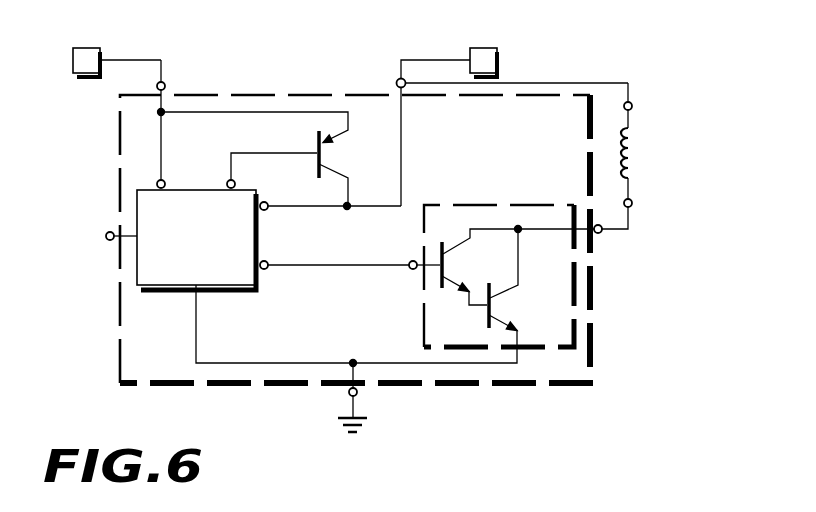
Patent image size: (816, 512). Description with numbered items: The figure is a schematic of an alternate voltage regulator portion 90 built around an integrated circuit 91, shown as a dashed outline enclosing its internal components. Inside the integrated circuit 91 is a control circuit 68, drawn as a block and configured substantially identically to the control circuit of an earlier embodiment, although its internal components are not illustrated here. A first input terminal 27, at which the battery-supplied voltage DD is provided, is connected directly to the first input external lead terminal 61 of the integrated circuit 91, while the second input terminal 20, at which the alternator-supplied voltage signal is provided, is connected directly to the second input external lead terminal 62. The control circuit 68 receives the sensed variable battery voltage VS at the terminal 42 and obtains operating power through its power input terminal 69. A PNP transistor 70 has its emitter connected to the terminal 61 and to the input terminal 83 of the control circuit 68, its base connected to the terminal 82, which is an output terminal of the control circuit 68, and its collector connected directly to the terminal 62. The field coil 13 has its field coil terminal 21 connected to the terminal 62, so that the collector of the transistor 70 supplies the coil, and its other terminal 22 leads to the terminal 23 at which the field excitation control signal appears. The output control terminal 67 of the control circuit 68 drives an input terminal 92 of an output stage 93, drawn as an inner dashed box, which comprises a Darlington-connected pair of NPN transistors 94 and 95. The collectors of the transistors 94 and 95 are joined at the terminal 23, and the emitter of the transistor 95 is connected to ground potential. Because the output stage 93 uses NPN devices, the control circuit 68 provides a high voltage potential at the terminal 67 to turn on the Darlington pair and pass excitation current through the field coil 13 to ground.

The field coil 13 is at (638, 152).
The second input terminal 20 is at (499, 61).
The field coil terminal 21 is at (633, 106).
The terminal 22 is at (633, 203).
The terminal 23 is at (600, 234).
The first input terminal 27 is at (73, 57).
The terminal 42 is at (106, 237).
The first input external lead terminal 61 is at (165, 83).
The second input external lead terminal 62 is at (397, 80).
The output control terminal 67 is at (268, 262).
The control circuit 68 is at (165, 287).
The power input terminal 69 is at (268, 203).
The PNP transistor 70 is at (330, 153).
The terminal 82 is at (235, 182).
The input terminal 83 is at (165, 182).
The voltage regulator portion 90 is at (213, 437).
The integrated circuit 91 is at (440, 387).
The input terminal 92 is at (411, 260).
The output stage 93 is at (495, 204).
The NPN transistor 94 is at (455, 265).
The NPN transistor 95 is at (500, 306).